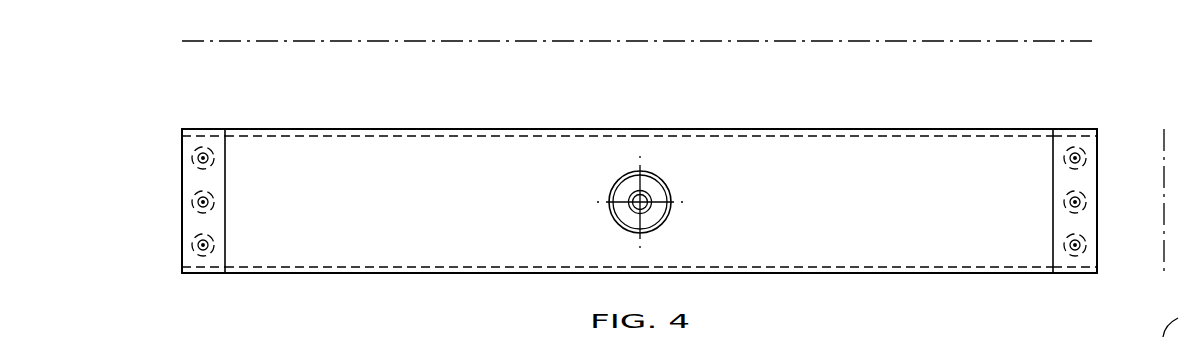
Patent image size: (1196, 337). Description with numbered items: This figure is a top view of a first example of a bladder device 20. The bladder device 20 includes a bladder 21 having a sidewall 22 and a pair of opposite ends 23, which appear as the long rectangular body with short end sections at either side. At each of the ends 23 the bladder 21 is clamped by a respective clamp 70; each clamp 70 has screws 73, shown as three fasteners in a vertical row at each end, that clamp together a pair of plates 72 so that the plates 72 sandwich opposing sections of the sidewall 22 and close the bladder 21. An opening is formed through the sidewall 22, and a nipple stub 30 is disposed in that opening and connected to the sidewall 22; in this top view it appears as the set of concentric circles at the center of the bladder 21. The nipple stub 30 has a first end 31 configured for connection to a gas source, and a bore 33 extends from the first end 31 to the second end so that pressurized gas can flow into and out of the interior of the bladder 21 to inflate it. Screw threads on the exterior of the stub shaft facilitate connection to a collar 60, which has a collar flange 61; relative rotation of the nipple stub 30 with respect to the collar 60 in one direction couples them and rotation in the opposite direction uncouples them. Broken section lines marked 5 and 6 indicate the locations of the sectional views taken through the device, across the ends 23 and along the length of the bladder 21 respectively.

The section line 5- 5 is at (1164, 129).
The section line 6- 6 is at (182, 41).
The bladder device 20 is at (770, 97).
The bladder 21 is at (486, 147).
The sidewall 22 is at (853, 143).
The opposite ends 23 is at (203, 116).
The nipple stub 30 is at (612, 221).
The first end 31 is at (642, 198).
The bore 33 is at (638, 200).
The collar 60 is at (659, 218).
The collar flange 61 is at (660, 191).
The clamps 70 is at (204, 284).
The plates 72 is at (214, 222).
The screws 73 is at (200, 162).